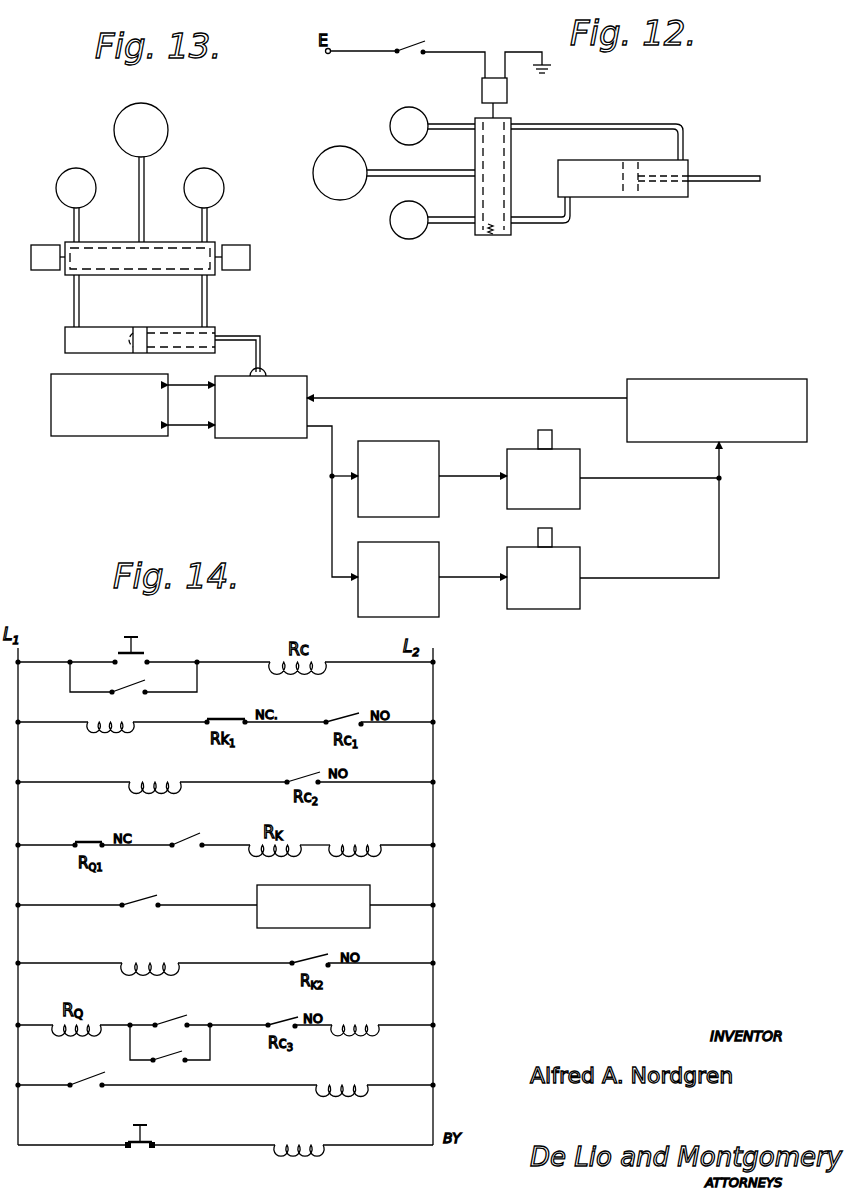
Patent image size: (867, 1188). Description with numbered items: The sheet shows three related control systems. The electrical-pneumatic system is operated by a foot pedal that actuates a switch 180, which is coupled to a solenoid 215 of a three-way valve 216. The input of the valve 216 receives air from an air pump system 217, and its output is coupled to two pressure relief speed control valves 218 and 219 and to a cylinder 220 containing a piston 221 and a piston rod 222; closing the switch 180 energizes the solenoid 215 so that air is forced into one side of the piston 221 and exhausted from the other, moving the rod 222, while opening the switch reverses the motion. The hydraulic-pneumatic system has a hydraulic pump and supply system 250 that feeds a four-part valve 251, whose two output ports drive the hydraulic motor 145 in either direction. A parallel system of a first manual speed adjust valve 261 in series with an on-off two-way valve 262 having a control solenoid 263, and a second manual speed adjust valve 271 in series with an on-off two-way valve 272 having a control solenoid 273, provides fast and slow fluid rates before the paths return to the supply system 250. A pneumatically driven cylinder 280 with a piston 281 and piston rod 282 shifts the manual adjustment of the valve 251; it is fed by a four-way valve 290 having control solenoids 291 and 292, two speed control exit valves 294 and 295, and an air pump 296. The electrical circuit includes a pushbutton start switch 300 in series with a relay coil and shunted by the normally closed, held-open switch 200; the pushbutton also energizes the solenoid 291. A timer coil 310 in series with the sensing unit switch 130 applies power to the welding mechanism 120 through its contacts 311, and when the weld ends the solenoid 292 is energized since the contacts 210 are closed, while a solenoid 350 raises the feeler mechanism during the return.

In FIG. 14, the welding mechanism 120 is at (369, 893).
In FIG. 14, the sensing unit switch 130 is at (183, 837).
In FIG. 13, the hydraulic motor 145 is at (140, 438).
In FIG. 12, the switch 180 is at (405, 44).
In FIG. 14, the switch 200 is at (120, 695).
In FIG. 14, the switch 210 is at (168, 1018).
In FIG. 12, the solenoid 215 is at (507, 97).
In FIG. 12, the three-way valve 216 is at (475, 193).
In FIG. 12, the air pump system 217 is at (338, 200).
In FIG. 12, the pressure relief speed control valve 218 is at (409, 239).
In FIG. 12, the pressure relief speed control valve 219 is at (396, 110).
In FIG. 12, the cylinder 220 is at (672, 197).
In FIG. 12, the piston 221 is at (620, 186).
In FIG. 12, the piston rod 222 is at (741, 170).
In FIG. 13, the hydraulic pump and supply system 250 is at (692, 371).
In FIG. 14, the hydraulic pump and supply system 250 is at (152, 780).
In FIG. 13, the four-part valve 251 is at (307, 380).
In FIG. 13, the first manual speed adjust valve 261 is at (426, 443).
In FIG. 13, the on-off two-way valve 262 is at (589, 494).
In FIG. 13, the control solenoid 263 is at (550, 440).
In FIG. 14, the control solenoid 263 is at (117, 735).
In FIG. 13, the second manual speed adjust valve 271 is at (439, 597).
In FIG. 13, the on-off two-way valve 272 is at (589, 595).
In FIG. 13, the control solenoid 273 is at (548, 537).
In FIG. 14, the control solenoid 273 is at (150, 956).
In FIG. 13, the pneumatically driven cylinder 280 is at (65, 343).
In FIG. 13, the piston 281 is at (130, 332).
In FIG. 13, the piston rod 282 is at (248, 323).
In FIG. 13, the four-way valve 290 is at (132, 278).
In FIG. 13, the control solenoid 291 is at (43, 239).
In FIG. 14, the control solenoid 291 is at (310, 1145).
In FIG. 13, the control solenoid 292 is at (240, 245).
In FIG. 14, the control solenoid 292 is at (344, 1085).
In FIG. 13, the speed control exit valve 294 is at (65, 175).
In FIG. 13, the speed control exit valve 295 is at (222, 173).
In FIG. 13, the air pump 296 is at (170, 102).
In FIG. 14, the pushbutton start switch 300 is at (150, 658).
In FIG. 14, the timer coil 310 is at (360, 843).
In FIG. 14, the timer contact 311 is at (158, 893).
In FIG. 14, the solenoid 350 is at (362, 1023).